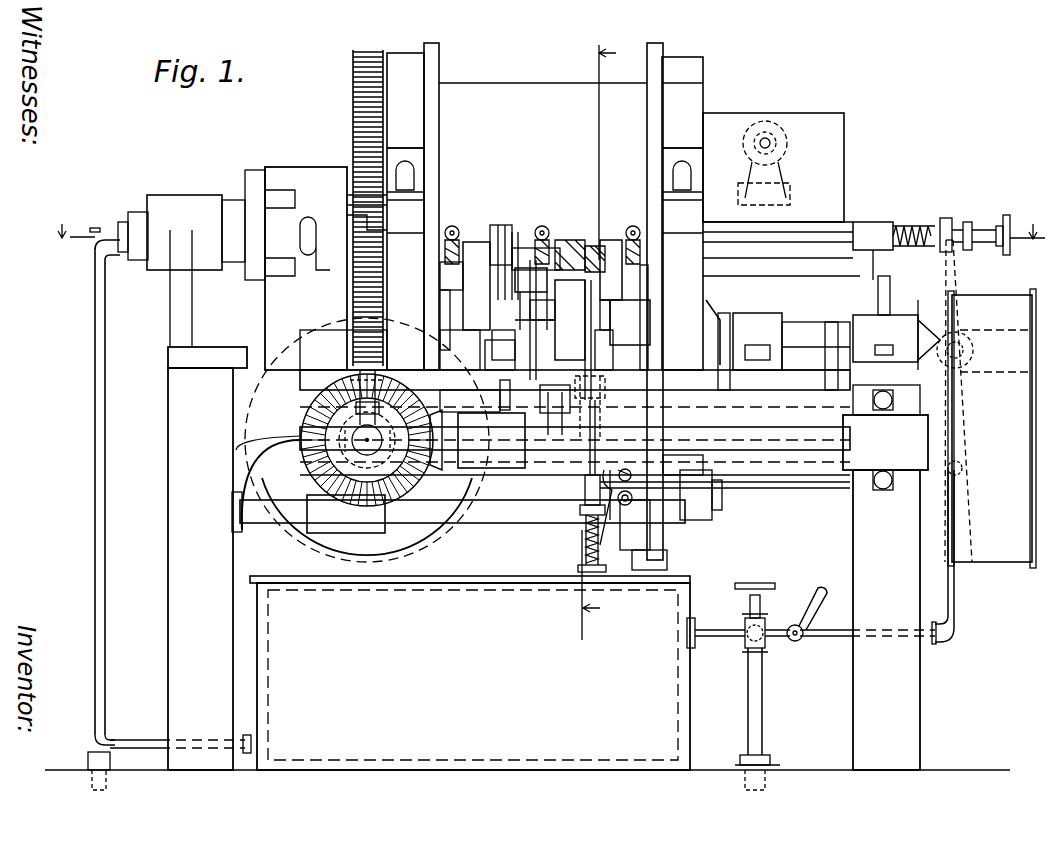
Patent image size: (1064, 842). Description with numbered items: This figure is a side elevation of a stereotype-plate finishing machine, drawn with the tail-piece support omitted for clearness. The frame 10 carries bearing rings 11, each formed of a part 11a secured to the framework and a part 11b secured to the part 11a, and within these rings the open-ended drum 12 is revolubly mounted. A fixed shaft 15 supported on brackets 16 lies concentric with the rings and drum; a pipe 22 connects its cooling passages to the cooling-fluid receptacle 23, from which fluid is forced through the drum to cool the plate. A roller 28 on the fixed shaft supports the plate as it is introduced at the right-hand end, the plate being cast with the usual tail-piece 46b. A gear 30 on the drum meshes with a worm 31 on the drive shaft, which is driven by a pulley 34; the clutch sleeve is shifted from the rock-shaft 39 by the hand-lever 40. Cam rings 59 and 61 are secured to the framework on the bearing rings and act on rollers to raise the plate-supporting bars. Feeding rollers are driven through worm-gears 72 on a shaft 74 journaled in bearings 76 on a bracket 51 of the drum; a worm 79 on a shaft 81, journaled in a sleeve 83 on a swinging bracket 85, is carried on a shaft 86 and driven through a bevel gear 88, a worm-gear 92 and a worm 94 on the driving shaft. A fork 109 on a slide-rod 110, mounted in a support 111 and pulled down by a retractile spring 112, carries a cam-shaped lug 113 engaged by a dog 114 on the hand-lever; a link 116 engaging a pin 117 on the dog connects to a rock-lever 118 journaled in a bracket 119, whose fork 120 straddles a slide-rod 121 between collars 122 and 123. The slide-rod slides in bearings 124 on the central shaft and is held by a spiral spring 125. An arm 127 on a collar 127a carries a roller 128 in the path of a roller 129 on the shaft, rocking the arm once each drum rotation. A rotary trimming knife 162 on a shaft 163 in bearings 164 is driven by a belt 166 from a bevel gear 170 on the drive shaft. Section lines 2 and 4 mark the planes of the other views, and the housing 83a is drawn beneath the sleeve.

The section line 2 is at (595, 342).
The section line arrows 4 is at (549, 236).
The frame 10 is at (192, 406).
The bearing rings 11 is at (398, 62).
The bearing ring part 11a is at (352, 300).
The bearing ring part 11b is at (398, 122).
The drum 12 is at (533, 100).
The fixed shaft 15 is at (805, 258).
The brackets 16 is at (190, 308).
The pipe 22 is at (96, 506).
The receptacle for cooling fluid 23 is at (421, 592).
The roller 28 is at (770, 122).
The gear 30 is at (376, 62).
The worm 31 is at (306, 410).
The pulley 34 is at (290, 536).
The rock-shaft 39 is at (498, 512).
The hand-lever 40 is at (547, 406).
The tail-piece 46b is at (812, 128).
The bracket 51 is at (478, 300).
The ring 59 is at (434, 57).
The cam ring 61 is at (659, 52).
The worm-gears 72 is at (452, 226).
The shaft 74 is at (518, 250).
The bearings 76 is at (474, 268).
The worm 79 is at (586, 246).
The shaft 81 is at (560, 240).
The sleeve 83 is at (531, 280).
The slide housing 83a is at (491, 440).
The brackets 85 is at (545, 326).
The shaft 86 is at (594, 480).
The bevel gear 88 is at (590, 385).
The worm-gear 92 is at (376, 392).
The worm 94 is at (306, 462).
The fork 109 is at (585, 488).
The slide-rod 110 is at (586, 550).
The support 111 is at (578, 568).
The retractile spring 112 is at (582, 528).
The lug 113 is at (604, 520).
The dog 114 is at (706, 278).
The link 116 is at (792, 476).
The pin 117 is at (640, 477).
The rock-lever 118 is at (968, 292).
The bracket 119 is at (935, 352).
The fork 120 is at (968, 222).
The slide-rod 121 is at (1006, 228).
The collar 122 is at (946, 218).
The collar 123 is at (980, 230).
The bearings 124 is at (860, 232).
The spiral compression and torsion spring 125 is at (908, 230).
The arm 127 is at (518, 235).
The collar 127a is at (480, 332).
The roller 128 is at (500, 225).
The roller 129 is at (494, 225).
The rotary trimming knife 162 is at (724, 320).
The shaft 163 is at (805, 330).
The bearings 164 is at (758, 328).
The belt 166 is at (1010, 540).
The bevel gear 170 is at (302, 418).